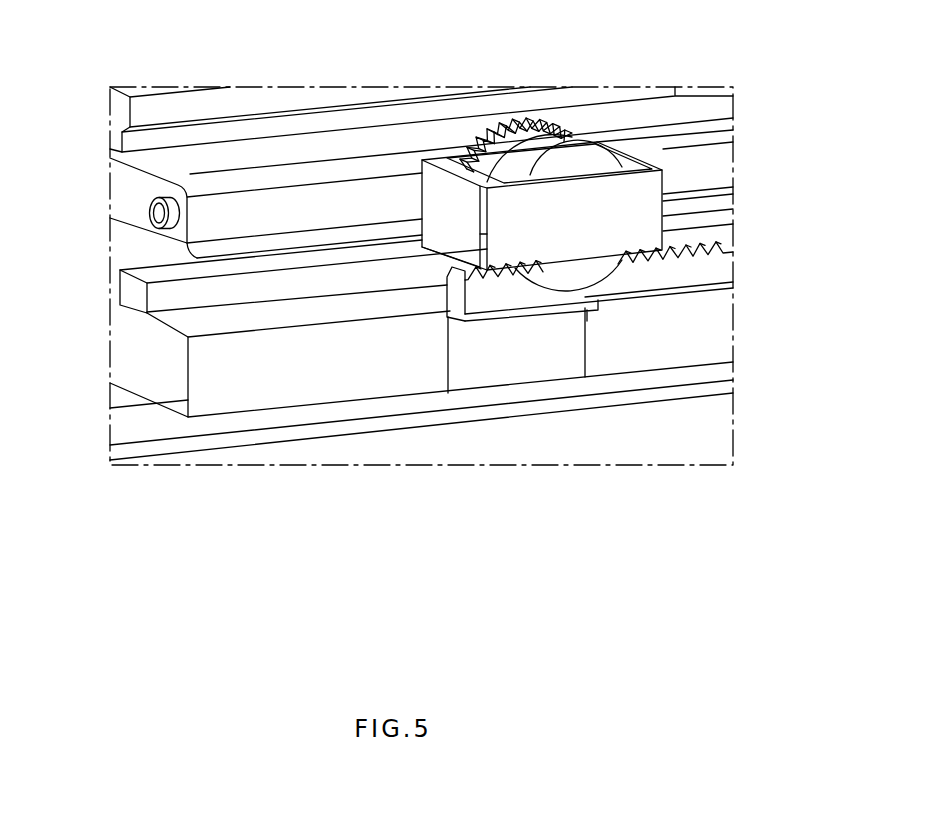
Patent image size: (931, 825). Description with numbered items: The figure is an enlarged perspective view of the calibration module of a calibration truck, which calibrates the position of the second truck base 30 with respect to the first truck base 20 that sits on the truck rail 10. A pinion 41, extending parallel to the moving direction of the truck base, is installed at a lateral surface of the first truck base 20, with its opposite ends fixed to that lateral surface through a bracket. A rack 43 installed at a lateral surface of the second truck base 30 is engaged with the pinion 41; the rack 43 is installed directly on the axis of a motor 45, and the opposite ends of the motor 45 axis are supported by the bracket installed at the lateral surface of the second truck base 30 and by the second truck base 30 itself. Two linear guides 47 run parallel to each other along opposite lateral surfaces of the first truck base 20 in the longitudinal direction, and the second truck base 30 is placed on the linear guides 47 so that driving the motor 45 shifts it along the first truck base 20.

The truck rail 10 is at (125, 431).
The first truck base 20 is at (203, 380).
The second truck base 30 is at (193, 217).
The pinion 41 is at (510, 298).
The rack 43 is at (502, 128).
The motor 45 is at (580, 157).
The linear guide 47 is at (293, 283).